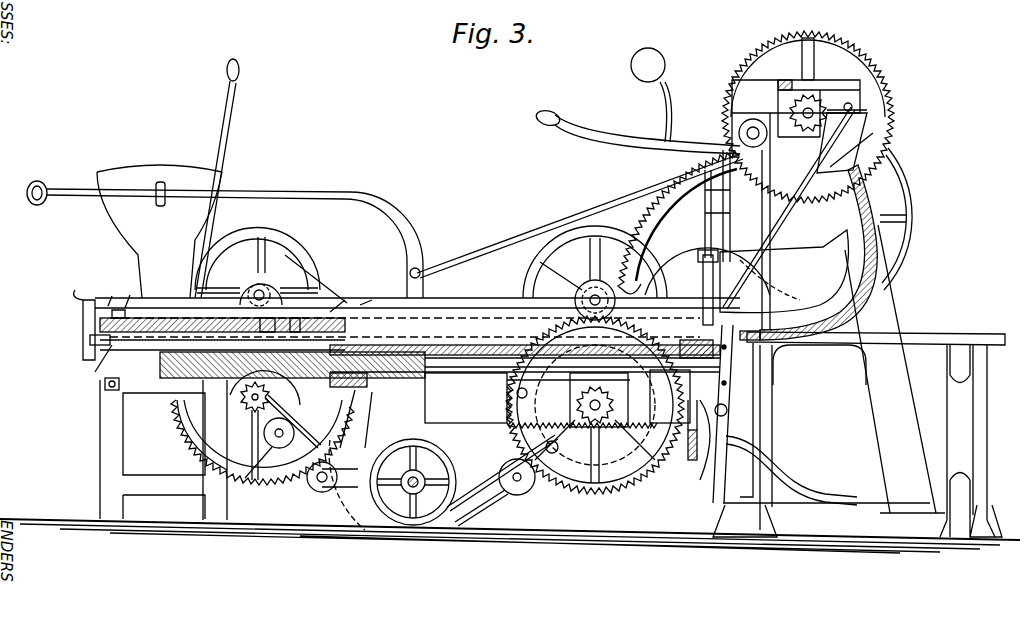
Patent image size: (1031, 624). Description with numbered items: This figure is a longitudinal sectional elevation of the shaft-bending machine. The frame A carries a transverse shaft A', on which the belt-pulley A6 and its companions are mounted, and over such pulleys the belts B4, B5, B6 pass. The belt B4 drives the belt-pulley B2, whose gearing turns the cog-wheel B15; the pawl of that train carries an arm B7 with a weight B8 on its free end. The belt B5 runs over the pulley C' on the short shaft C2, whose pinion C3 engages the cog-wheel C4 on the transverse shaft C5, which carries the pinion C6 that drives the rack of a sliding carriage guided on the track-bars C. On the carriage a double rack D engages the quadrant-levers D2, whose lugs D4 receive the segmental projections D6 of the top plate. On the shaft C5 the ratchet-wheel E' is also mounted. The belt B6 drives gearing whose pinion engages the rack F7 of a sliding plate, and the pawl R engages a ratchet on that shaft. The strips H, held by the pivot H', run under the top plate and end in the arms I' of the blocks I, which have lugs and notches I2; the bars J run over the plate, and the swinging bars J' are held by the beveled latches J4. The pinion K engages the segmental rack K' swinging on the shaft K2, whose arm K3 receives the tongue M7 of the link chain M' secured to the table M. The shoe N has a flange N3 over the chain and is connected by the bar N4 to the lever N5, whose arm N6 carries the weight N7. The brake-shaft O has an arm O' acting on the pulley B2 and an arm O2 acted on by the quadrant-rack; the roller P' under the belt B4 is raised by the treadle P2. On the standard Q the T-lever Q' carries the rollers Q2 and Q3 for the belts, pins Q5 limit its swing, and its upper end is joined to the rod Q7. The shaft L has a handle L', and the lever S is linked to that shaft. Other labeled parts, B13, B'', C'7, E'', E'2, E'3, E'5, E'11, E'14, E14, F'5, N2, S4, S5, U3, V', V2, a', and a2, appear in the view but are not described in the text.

The frame A is at (163, 450).
The shaft A' is at (356, 419).
The belt-pulley A6 is at (430, 530).
The belt-pulley B2 is at (903, 195).
The belt B4 is at (678, 222).
The belt B5 is at (370, 275).
The belt B6 is at (485, 300).
The arm B7 is at (572, 216).
The weight B8 is at (860, 95).
The bearing B13 is at (795, 55).
The cog-wheel B15 is at (868, 120).
The pinion B'' is at (796, 116).
The track-bars C is at (333, 292).
The pulley C' is at (257, 248).
The short shaft C2 is at (268, 290).
The pinion C3 is at (250, 288).
The cog-wheel C4 is at (265, 442).
The transverse shaft C5 is at (243, 405).
The pinion C6 is at (266, 394).
The gear C'7 is at (354, 395).
The double rack D is at (222, 338).
The quadrant-lever D2 is at (281, 359).
The lug D4 is at (77, 322).
The segmental projection D6 is at (106, 293).
The ratchet-wheel E' is at (574, 284).
The pinion E'' is at (588, 320).
The hub E'2 is at (580, 295).
The bed E'3 is at (525, 346).
The boss E'5 is at (615, 272).
The arm E'11 is at (559, 465).
The arm E'14 is at (620, 457).
The gear wheel E14 is at (640, 482).
The bar F'5 is at (453, 385).
The rack F7 is at (461, 408).
The metal strips H is at (102, 387).
The pivot H' is at (714, 364).
The blocks I is at (122, 299).
The arms I' is at (80, 341).
The lugs I2 is at (95, 363).
The metal strips J is at (417, 307).
The flat bar J' is at (459, 301).
The beveled latch J4 is at (370, 295).
The pinion K is at (524, 216).
The segmental rack K' is at (686, 225).
The shaft K2 is at (297, 309).
The arm K3 is at (856, 105).
The shaft L is at (186, 434).
The handle L' is at (217, 178).
The platform or table M is at (859, 381).
The chain M' is at (828, 252).
The tongue M7 is at (880, 150).
The shoe N is at (784, 271).
The chute part N2 is at (803, 287).
The flange N3 is at (826, 263).
The link or bar N4 is at (737, 221).
The lever N5 is at (593, 134).
The arm N6 is at (674, 112).
The weight N7 is at (648, 65).
The brake-shaft O is at (764, 436).
The arm O' is at (819, 365).
The arm O2 is at (699, 426).
The roller P' is at (687, 440).
The treadle P2 is at (825, 497).
The standard Q is at (418, 451).
The rocking T-lever Q' is at (398, 245).
The grooved roller Q2 is at (318, 492).
The grooved roller Q3 is at (528, 490).
The pins Q5 is at (159, 231).
The rod Q7 is at (345, 200).
The pawl R is at (561, 399).
The lever S is at (723, 414).
The pin S4 is at (546, 440).
The sprocket S5 is at (269, 448).
The bracket U3 is at (748, 269).
The post V' is at (707, 286).
The screw V2 is at (695, 287).
The direction arrow a' is at (282, 172).
The direction arrow a2 is at (485, 435).